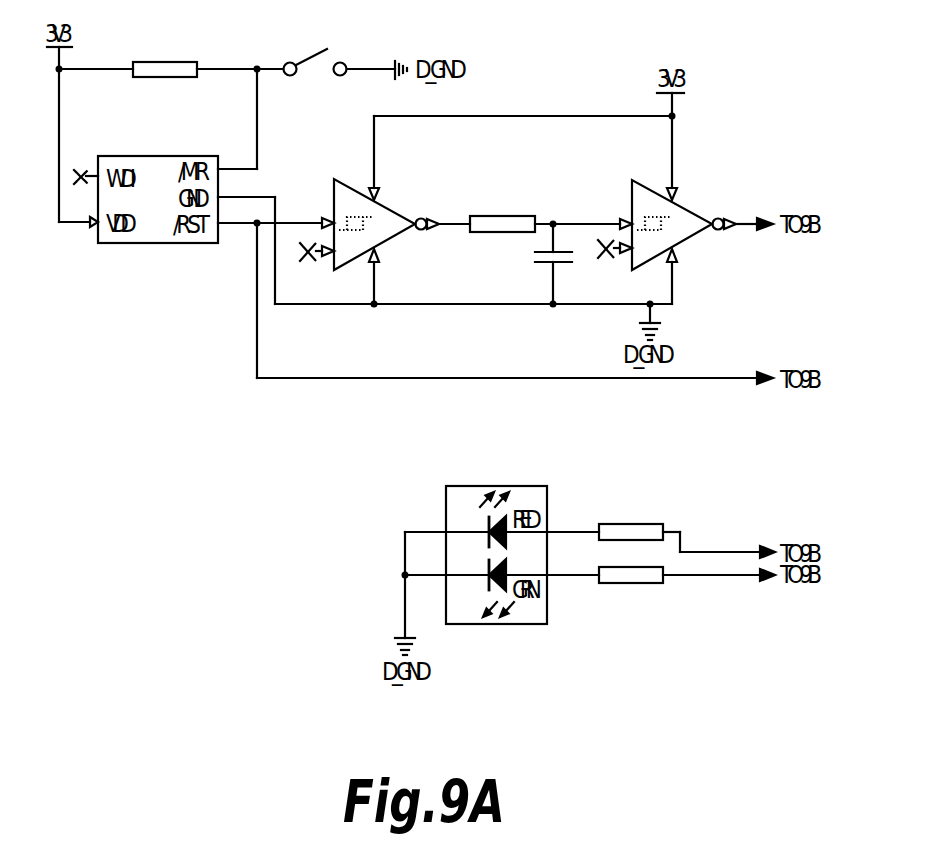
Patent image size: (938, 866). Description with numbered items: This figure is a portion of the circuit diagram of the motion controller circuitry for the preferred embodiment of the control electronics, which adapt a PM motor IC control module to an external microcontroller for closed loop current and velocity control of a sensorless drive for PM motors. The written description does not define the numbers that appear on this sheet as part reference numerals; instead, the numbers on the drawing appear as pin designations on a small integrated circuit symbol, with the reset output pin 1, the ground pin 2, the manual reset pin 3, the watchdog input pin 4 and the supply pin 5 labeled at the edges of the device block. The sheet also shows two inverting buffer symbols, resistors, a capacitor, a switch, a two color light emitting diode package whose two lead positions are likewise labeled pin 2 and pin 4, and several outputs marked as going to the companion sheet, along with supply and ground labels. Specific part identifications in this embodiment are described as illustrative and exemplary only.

The /RST pin of supervisor IC 1 is at (270, 212).
The GND pin of supervisor IC / LED pin 2 is at (332, 352).
The /MR pin of supervisor IC 3 is at (237, 159).
The WDI pin (no connect) / LED pin 4 is at (260, 361).
The VDD pin of supervisor IC 5 is at (78, 211).